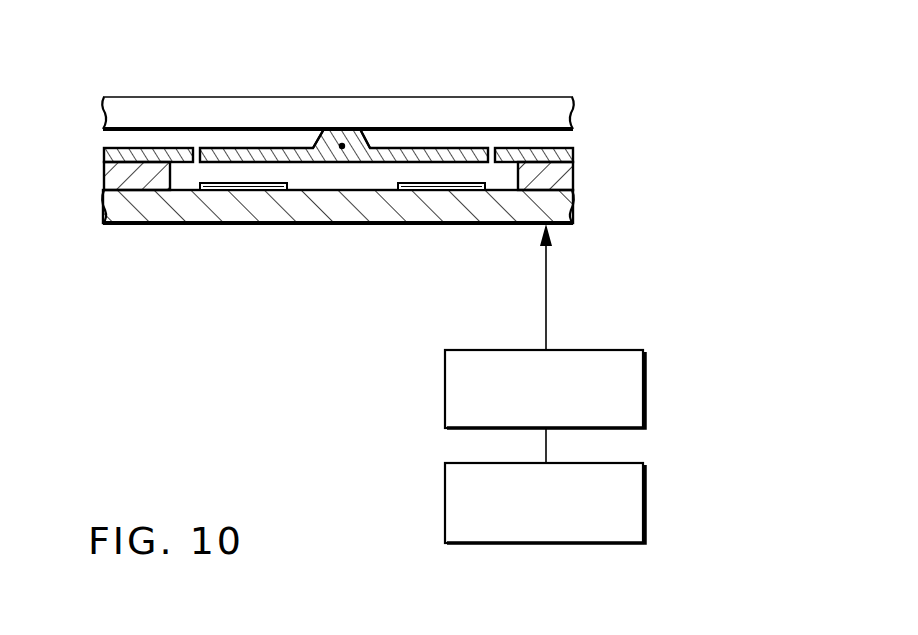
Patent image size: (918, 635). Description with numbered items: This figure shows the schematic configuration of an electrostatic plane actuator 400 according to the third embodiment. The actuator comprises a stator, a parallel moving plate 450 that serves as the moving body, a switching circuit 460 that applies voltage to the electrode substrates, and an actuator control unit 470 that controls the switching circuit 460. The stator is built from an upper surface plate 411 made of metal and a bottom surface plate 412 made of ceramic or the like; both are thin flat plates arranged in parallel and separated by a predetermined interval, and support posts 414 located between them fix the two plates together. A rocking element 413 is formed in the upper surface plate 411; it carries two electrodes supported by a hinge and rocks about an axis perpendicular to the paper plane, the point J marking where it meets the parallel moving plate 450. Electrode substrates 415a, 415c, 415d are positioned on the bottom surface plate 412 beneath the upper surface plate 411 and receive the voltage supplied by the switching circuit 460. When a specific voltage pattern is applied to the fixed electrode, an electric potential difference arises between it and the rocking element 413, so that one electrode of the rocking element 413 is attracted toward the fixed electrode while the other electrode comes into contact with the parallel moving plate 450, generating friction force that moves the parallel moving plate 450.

The electrostatic plane actuator 400 is at (588, 126).
The parallel moving plate 450 is at (475, 103).
The upper surface plate 411 is at (106, 151).
The rocking element 413 is at (321, 122).
The junction point J is at (343, 144).
The support post 414 is at (137, 188).
The bottom surface plate 412 is at (333, 213).
The electrode 415c is at (217, 189).
The electrode substrate 415a is at (268, 189).
The electrode 415d is at (417, 189).
The switching circuit 460 is at (651, 390).
The actuator control unit 470 is at (651, 500).